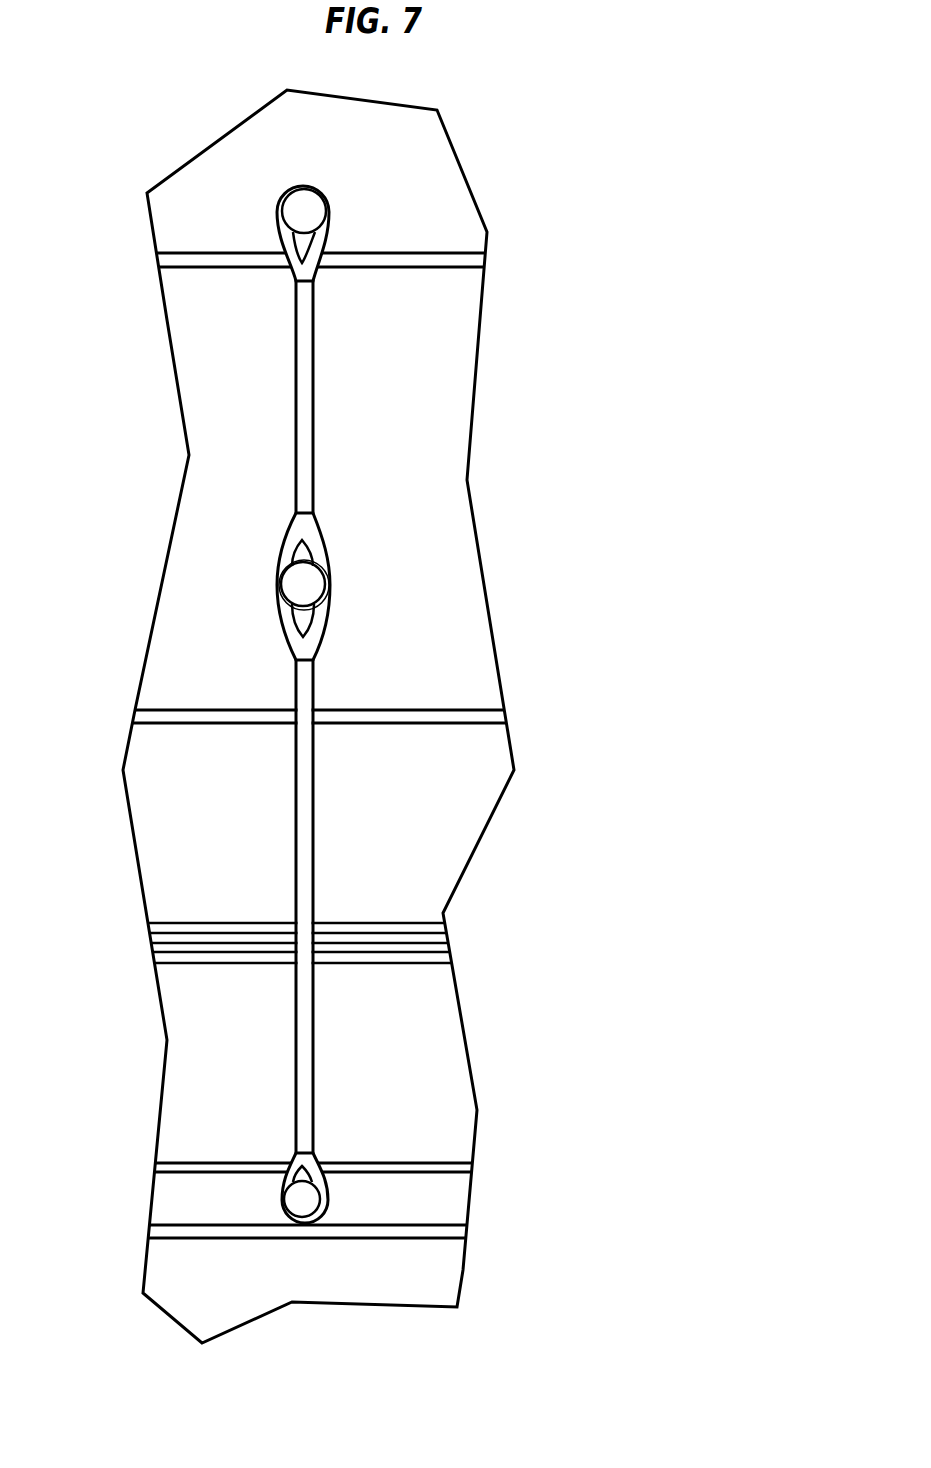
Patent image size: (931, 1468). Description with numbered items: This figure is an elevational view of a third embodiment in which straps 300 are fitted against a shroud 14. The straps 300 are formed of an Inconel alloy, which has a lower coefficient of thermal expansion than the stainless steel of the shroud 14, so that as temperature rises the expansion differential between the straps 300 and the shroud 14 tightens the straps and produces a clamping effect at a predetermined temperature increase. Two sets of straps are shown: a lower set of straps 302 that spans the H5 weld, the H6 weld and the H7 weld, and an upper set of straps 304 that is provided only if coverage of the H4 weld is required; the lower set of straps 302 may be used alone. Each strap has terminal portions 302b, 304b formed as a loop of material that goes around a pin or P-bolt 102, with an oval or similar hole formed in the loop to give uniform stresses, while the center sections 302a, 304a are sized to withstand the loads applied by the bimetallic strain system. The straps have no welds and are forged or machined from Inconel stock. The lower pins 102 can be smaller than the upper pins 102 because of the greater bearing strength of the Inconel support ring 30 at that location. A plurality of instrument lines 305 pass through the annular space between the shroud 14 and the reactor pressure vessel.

The straps 300 is at (270, 716).
The shroud 14 is at (198, 622).
The pins or P-bolts 102 is at (298, 217).
The upper set of straps 304 is at (431, 409).
The center section of upper strap 304a is at (309, 404).
The terminal portion of upper strap 304b is at (319, 236).
The lower set of straps 302 is at (316, 900).
The center section of lower strap 302a is at (297, 857).
The terminal portion of lower strap 302b is at (325, 627).
The H4 weld H4 is at (453, 247).
The H5 weld H5 is at (460, 703).
The H6 weld H6 is at (438, 728).
The H7 weld H7 is at (429, 1160).
The instrument lines 305 is at (450, 943).
The support ring 30 is at (450, 1232).